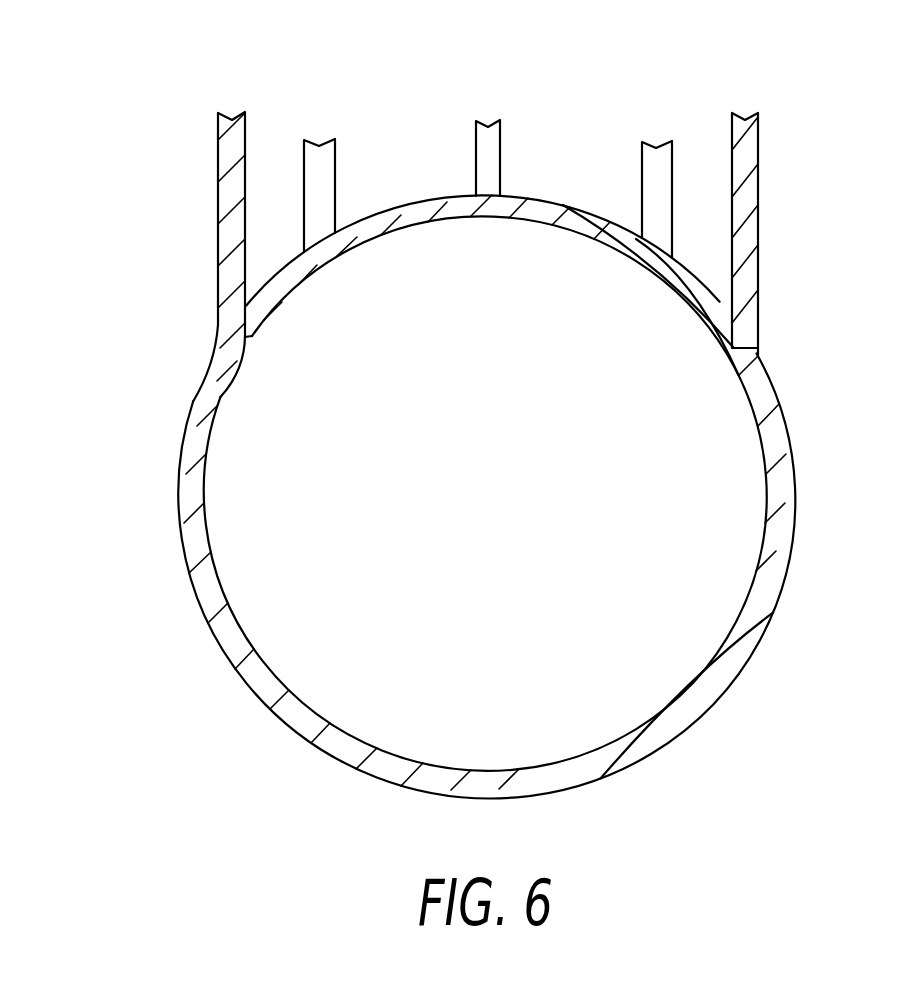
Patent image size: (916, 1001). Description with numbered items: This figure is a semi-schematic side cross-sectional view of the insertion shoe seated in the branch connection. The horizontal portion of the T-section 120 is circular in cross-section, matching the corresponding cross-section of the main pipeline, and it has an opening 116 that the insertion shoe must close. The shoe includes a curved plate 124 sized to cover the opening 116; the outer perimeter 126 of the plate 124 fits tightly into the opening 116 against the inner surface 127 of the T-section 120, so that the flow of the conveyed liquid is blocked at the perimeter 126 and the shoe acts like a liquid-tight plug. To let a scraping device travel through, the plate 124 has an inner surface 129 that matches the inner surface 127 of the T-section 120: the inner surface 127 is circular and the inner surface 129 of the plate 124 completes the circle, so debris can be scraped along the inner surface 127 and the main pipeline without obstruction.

The opening 116 is at (317, 348).
The T-section 120 is at (218, 176).
The curved plate 124 is at (600, 213).
The outer perimeter 126 is at (758, 349).
The inner surface 127 is at (247, 335).
The inner surface 129 is at (694, 308).